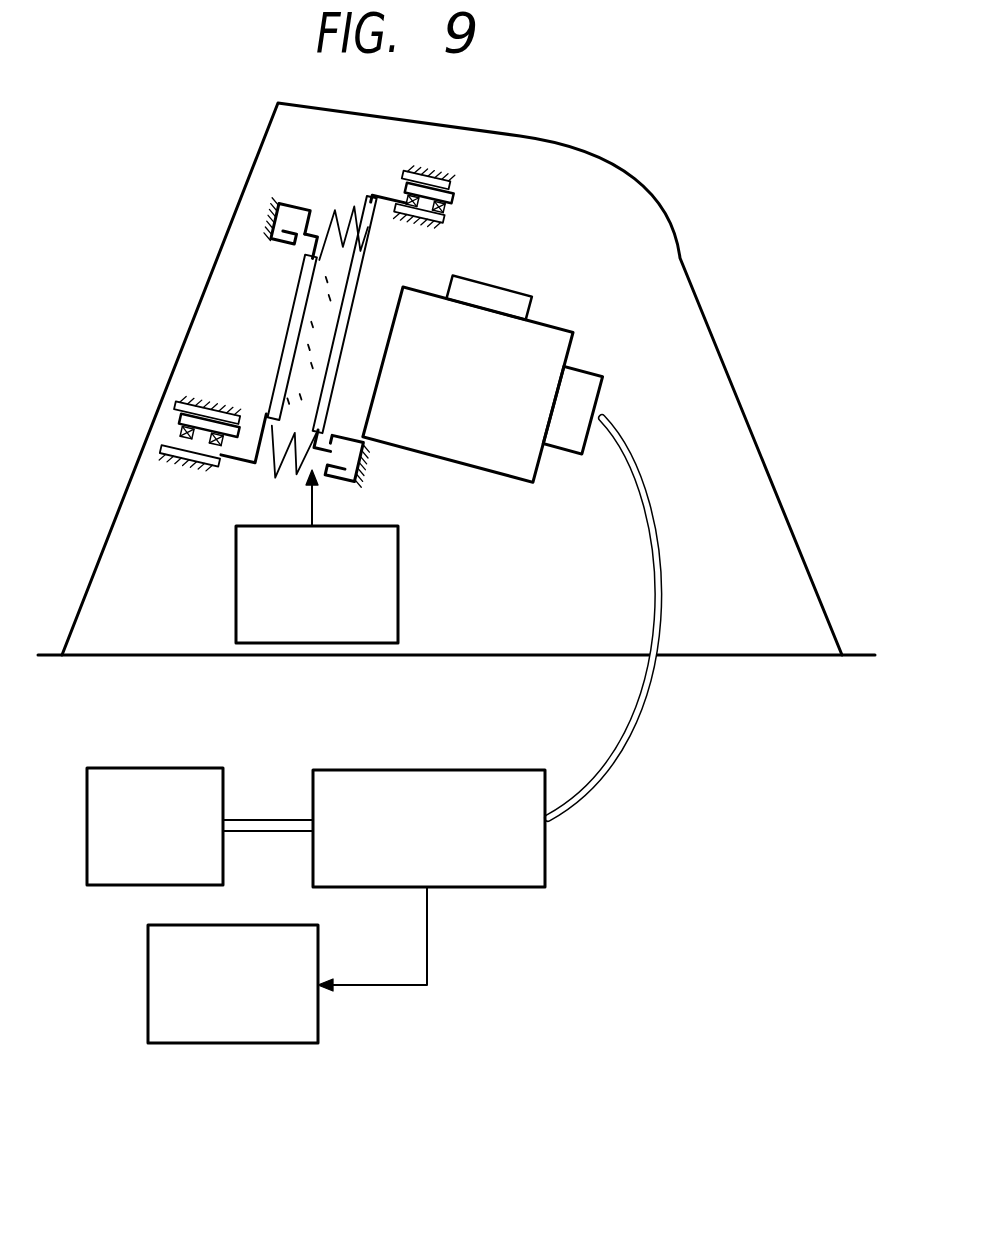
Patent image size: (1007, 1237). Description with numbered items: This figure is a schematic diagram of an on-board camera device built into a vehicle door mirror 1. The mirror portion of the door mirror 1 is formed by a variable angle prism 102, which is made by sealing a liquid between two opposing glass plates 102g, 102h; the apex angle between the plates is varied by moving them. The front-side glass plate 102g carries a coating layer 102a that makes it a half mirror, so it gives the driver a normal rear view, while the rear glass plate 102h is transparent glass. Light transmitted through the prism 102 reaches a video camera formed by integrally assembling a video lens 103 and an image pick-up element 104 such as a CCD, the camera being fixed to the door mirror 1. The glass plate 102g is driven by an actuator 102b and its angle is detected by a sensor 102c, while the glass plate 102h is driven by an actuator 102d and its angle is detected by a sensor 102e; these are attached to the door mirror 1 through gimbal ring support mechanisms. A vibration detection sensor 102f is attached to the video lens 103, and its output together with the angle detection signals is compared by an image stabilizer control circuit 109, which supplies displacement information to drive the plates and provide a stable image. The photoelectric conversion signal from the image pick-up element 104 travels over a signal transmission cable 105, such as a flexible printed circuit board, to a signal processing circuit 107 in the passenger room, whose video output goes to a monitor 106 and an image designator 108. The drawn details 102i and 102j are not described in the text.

The door mirror 1 is at (682, 258).
The variable angle prism 102 is at (337, 247).
The coating layer 102a is at (302, 290).
The actuator 102b is at (180, 482).
The sensor 102c is at (292, 206).
The actuator 102d is at (441, 176).
The sensor 102e is at (365, 462).
The vibration detection sensor 102f is at (498, 285).
The glass plate 102g is at (283, 365).
The glass plate 102h is at (353, 287).
The optical element 102i is at (290, 408).
The spring 102j is at (295, 466).
The video lens 103 is at (545, 340).
The image pick-up element 104 is at (586, 380).
The signal transmission cable 105 is at (660, 552).
The monitor 106 is at (198, 768).
The signal processing circuit 107 is at (511, 770).
The image designator 108 is at (318, 942).
The image stabilizer control circuit 109 is at (398, 542).